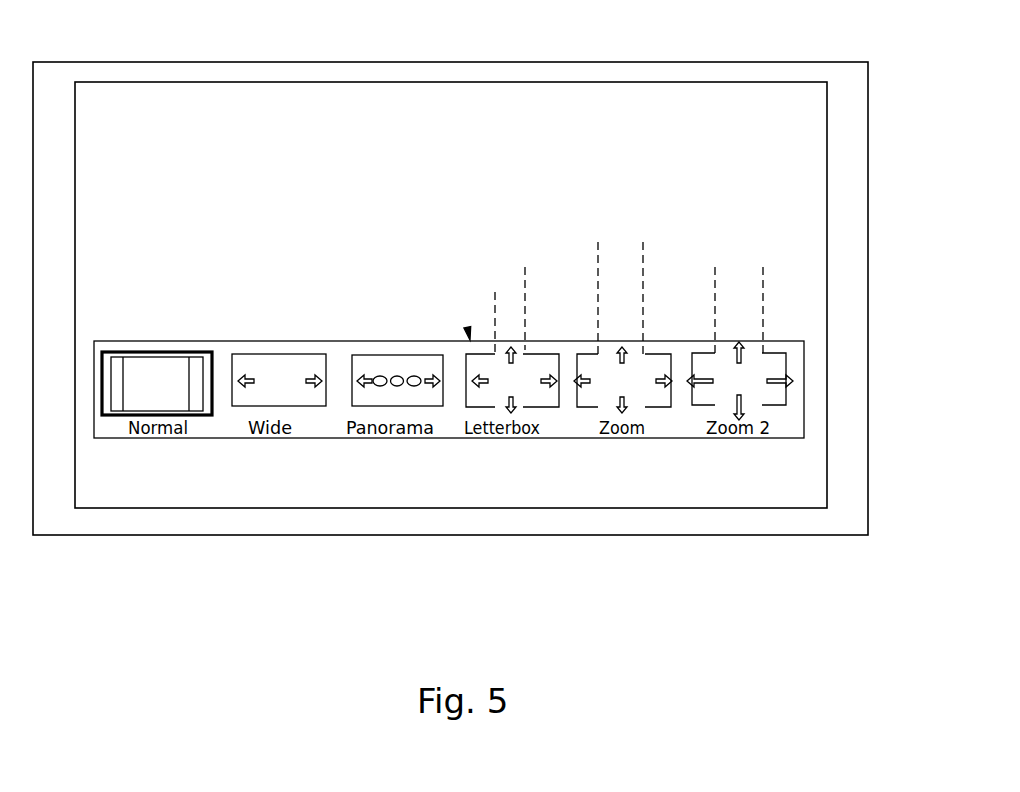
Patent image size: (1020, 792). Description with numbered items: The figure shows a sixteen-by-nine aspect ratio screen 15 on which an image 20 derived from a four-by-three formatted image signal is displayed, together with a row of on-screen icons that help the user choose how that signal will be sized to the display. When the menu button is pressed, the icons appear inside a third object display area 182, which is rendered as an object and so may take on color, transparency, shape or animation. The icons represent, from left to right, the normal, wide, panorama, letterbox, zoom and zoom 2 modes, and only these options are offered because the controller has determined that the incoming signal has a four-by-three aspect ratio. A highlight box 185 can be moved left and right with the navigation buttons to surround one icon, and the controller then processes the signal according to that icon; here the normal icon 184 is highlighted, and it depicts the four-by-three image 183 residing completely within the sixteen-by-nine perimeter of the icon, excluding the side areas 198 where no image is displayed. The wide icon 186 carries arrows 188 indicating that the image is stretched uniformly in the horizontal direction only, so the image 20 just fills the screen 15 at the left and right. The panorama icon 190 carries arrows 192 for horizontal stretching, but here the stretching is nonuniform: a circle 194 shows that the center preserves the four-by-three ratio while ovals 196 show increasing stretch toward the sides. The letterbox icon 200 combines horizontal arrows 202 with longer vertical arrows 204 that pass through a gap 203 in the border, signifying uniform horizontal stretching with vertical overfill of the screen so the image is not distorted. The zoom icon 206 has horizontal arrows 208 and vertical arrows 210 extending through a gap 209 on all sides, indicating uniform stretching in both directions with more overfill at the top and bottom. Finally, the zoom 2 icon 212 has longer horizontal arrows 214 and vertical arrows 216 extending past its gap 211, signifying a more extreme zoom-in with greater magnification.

The screen 15 is at (548, 62).
The image 20 is at (662, 82).
The third object display area 182 is at (467, 330).
The four-by-three aspect ratio image 183 is at (142, 357).
The normal icon 184 is at (157, 372).
The highlight box 185 is at (212, 415).
The wide icon 186 is at (262, 354).
The arrows 188 is at (243, 388).
The panorama icon 190 is at (352, 355).
The arrows 192 is at (359, 385).
The circle 194 is at (397, 376).
The ovals 196 is at (413, 376).
The areas where no image is displayed 198 is at (167, 356).
The letterbox icon 200 is at (488, 354).
The horizontal arrows 202 is at (474, 386).
The gap 203 is at (495, 292).
The vertical arrows 204 is at (511, 397).
The zoom icon 206 is at (597, 354).
The horizontal arrows 208 is at (661, 388).
The gap 209 is at (643, 242).
The vertical arrows 210 is at (622, 397).
The gap 211 is at (763, 267).
The zoom 2 icon 212 is at (707, 353).
The horizontal arrows 214 is at (702, 388).
The vertical arrows 216 is at (741, 395).